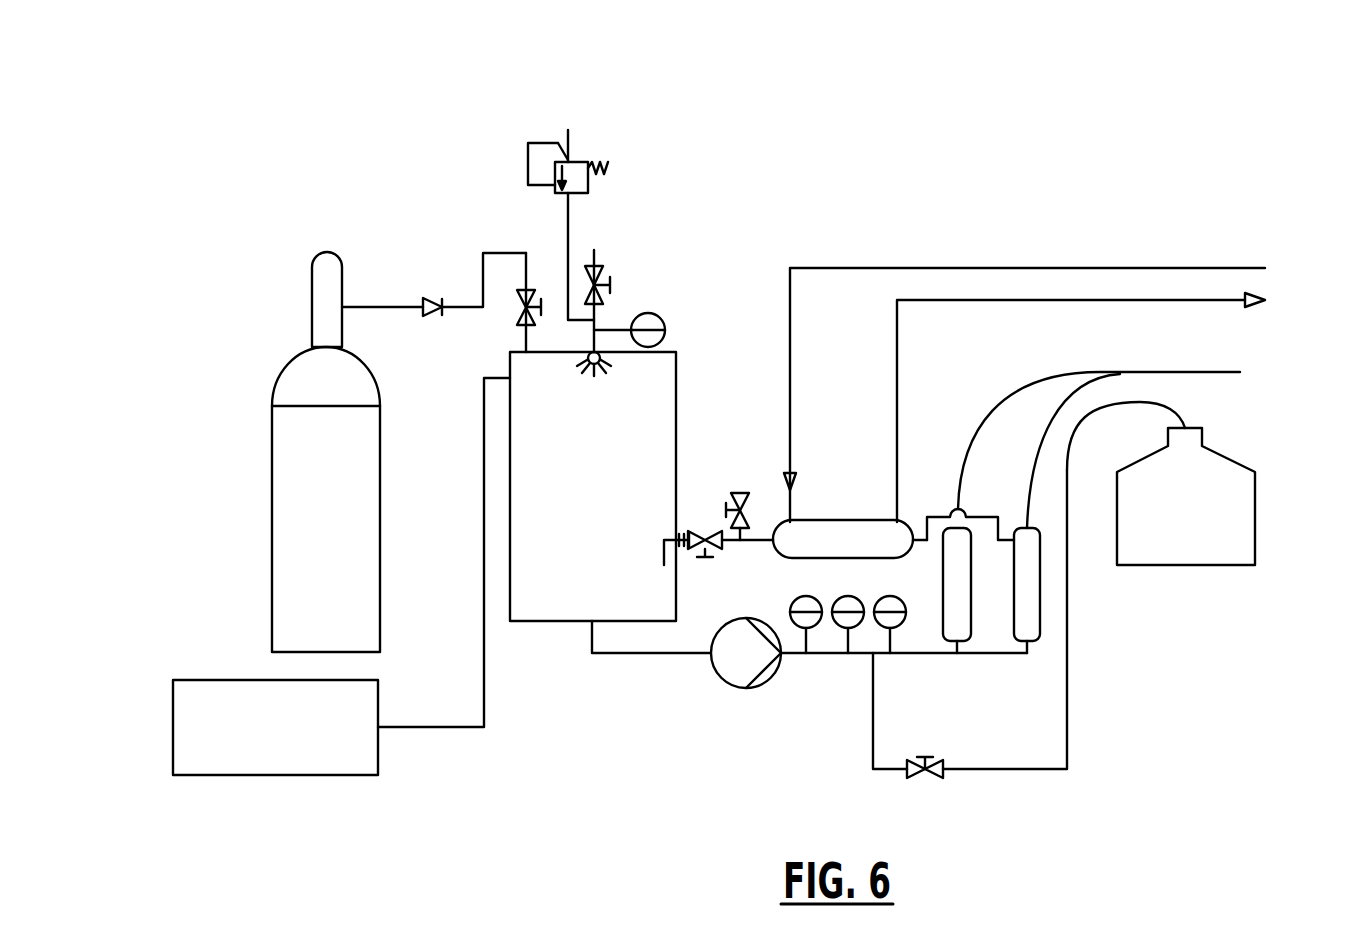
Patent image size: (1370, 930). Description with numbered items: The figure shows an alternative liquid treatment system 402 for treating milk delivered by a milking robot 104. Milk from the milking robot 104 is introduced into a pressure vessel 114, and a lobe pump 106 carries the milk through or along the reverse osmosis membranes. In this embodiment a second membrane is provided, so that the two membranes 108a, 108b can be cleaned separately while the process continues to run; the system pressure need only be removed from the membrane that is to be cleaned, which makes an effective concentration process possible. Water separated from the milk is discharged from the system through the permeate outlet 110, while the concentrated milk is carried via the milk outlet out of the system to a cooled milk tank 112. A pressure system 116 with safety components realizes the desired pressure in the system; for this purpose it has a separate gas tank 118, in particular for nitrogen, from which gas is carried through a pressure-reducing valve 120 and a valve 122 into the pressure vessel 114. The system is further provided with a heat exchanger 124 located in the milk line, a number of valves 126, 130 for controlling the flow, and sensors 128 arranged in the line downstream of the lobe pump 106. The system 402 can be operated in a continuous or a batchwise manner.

The milking robot 104 is at (215, 695).
The lobe pump 106 is at (723, 667).
The reverse osmosis membrane 108a is at (956, 575).
The second reverse osmosis membrane 108b is at (1028, 582).
The permeate outlet 110 is at (1218, 372).
The cooled milk tank 112 is at (1240, 532).
The pressure vessel 114 is at (549, 607).
The pressure system 116 is at (620, 145).
The gas tank 118 is at (288, 465).
The pressure-reducing valve 120 is at (430, 298).
The valve 122 is at (515, 320).
The heat exchanger 124 is at (822, 532).
The valves 126 is at (726, 485).
The sensors 128 is at (773, 602).
The valve 130 is at (937, 778).
The liquid treatment system 402 is at (898, 155).